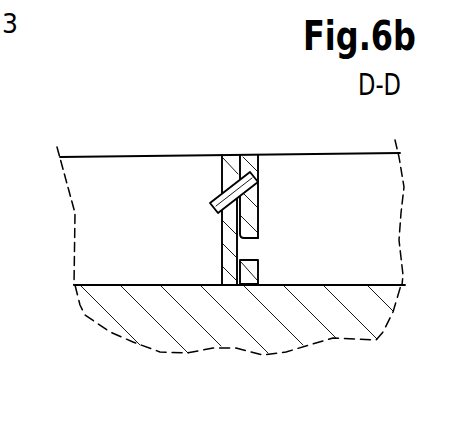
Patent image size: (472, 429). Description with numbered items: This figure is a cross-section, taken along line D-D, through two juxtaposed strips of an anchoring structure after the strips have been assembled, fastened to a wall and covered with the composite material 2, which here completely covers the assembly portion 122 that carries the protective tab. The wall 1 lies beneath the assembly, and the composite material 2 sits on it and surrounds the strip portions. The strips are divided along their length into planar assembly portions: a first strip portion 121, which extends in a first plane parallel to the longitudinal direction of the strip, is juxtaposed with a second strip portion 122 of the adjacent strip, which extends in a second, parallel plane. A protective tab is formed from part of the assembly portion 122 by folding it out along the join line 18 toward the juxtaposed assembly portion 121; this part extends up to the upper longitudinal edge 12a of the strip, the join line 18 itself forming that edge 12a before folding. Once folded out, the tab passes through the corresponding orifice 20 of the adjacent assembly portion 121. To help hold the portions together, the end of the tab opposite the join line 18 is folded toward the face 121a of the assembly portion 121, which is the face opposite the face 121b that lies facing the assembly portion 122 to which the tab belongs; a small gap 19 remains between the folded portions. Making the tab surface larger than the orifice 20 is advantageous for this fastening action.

The base body 1 is at (374, 285).
The composite material 2 is at (379, 198).
The first longitudinal edge 12a is at (232, 160).
The join line 18 is at (253, 179).
The gap 19 is at (242, 243).
The orifice 20 is at (222, 180).
The first strip portion 121 is at (259, 175).
The face of the assembly portion 121a is at (213, 272).
The face of the assembly portion 121b is at (255, 277).
The second strip portion 122 is at (258, 266).